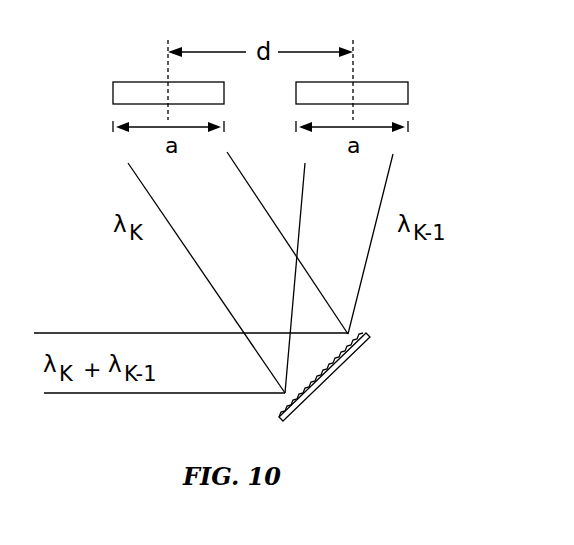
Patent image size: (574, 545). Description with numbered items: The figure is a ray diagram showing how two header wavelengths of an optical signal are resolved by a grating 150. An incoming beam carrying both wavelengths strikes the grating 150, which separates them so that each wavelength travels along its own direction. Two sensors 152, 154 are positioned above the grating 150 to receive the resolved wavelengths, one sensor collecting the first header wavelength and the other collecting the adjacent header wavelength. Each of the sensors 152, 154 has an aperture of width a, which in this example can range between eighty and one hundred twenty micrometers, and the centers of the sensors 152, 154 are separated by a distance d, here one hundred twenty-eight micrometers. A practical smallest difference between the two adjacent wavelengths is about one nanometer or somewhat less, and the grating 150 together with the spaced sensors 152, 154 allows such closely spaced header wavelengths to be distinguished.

The grating 150 is at (333, 365).
The sensor 152 is at (140, 95).
The sensor 154 is at (387, 90).